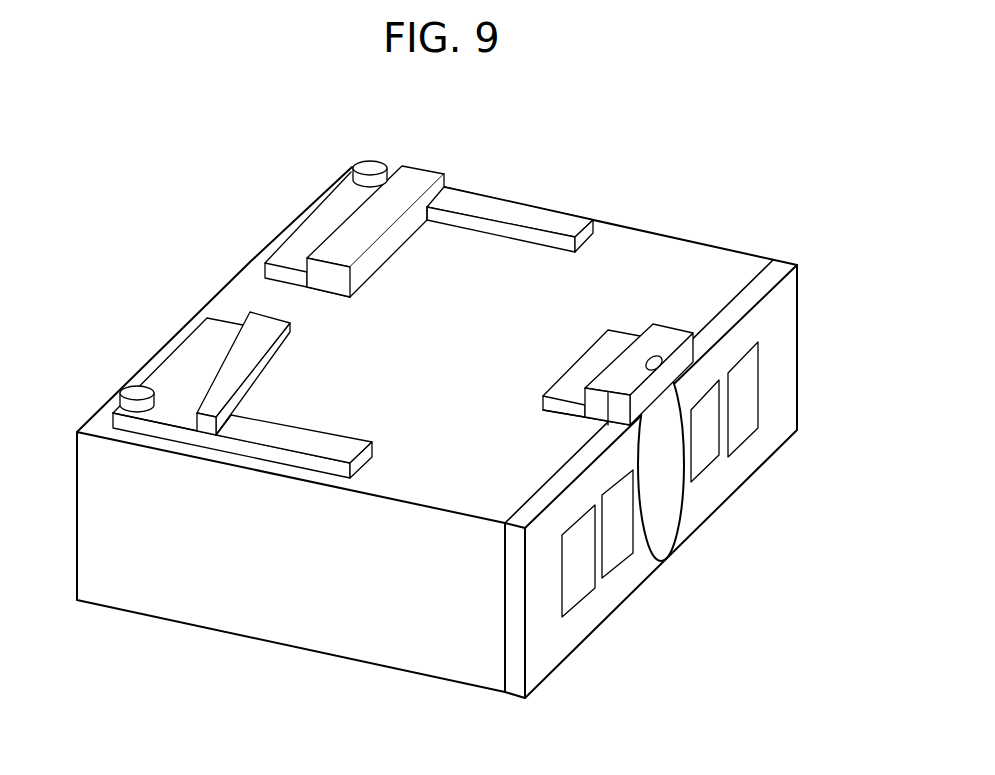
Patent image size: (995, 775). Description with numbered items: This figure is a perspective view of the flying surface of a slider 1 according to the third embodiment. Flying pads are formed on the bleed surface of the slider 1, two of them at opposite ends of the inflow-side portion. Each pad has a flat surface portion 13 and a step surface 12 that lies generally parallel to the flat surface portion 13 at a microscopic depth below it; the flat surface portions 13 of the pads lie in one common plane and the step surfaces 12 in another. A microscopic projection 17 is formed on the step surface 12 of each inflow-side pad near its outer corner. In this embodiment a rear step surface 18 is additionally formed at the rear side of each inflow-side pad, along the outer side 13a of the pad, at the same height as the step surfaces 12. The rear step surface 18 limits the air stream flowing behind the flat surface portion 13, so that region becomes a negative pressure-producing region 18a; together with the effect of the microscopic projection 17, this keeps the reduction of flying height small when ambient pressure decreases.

The slider 1 is at (257, 682).
The step surface 12 is at (333, 220).
The flat surface portion 13 is at (417, 176).
The outer side of the pad 13a is at (170, 427).
The microscopic projection 17 is at (372, 168).
The rear step surface 18 is at (511, 206).
The negative pressure-producing region 18a is at (435, 243).